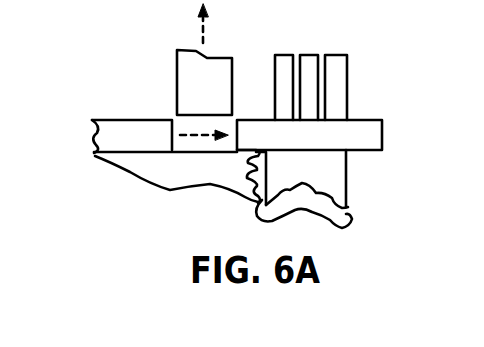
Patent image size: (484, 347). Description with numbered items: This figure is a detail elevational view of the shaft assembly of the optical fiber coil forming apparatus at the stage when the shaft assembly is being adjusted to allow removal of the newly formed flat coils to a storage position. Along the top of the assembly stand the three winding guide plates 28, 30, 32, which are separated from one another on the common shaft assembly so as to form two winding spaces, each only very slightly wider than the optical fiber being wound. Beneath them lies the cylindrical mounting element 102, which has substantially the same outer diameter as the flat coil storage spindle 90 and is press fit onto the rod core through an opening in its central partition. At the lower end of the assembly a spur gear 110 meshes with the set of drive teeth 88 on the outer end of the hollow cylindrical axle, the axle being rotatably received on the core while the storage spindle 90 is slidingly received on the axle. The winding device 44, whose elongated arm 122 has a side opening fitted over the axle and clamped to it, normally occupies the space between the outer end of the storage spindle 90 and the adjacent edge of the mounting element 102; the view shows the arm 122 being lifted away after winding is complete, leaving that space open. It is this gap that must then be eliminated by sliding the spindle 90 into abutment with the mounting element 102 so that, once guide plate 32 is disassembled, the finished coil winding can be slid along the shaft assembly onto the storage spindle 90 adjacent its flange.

The winding guide plate 28 is at (336, 67).
The winding guide plate 30 is at (309, 67).
The winding guide plate 32 is at (282, 65).
The fiber winding device 44 is at (185, 47).
The drive teeth 88 is at (246, 202).
The flat coil storage spindle 90 is at (96, 135).
The cylindrical mounting element 102 is at (432, 103).
The spur gear 110 is at (345, 224).
The elongated arm 122 is at (200, 105).